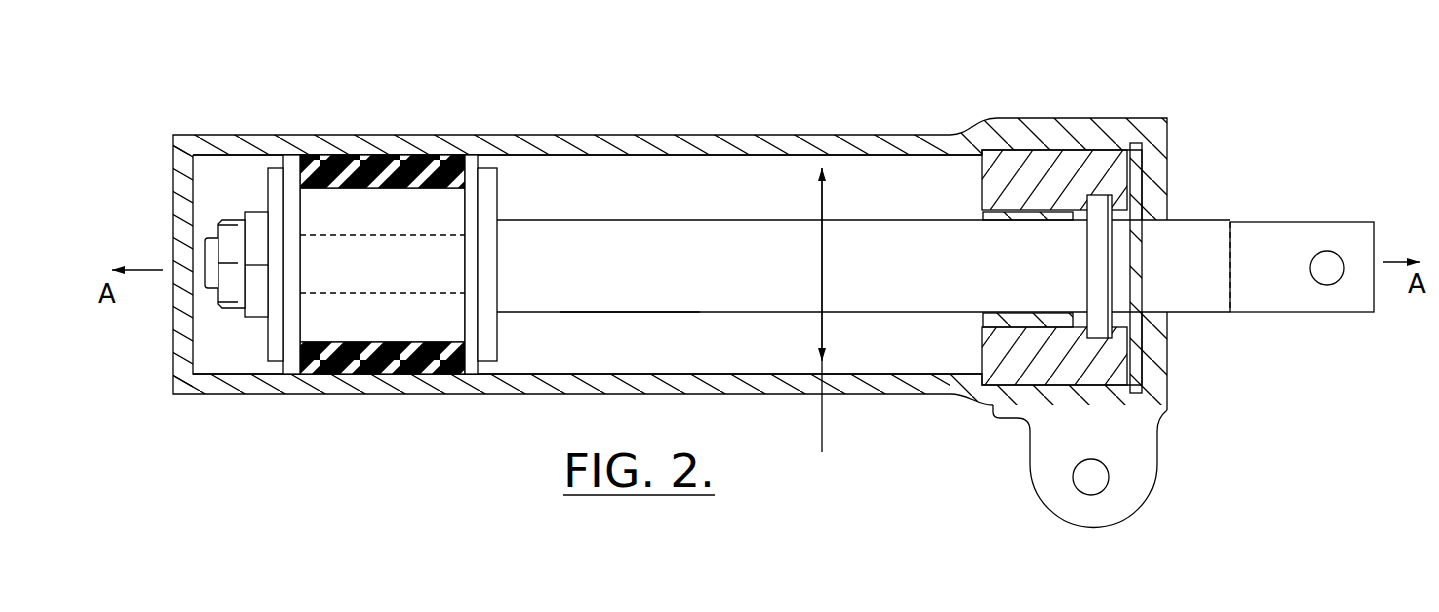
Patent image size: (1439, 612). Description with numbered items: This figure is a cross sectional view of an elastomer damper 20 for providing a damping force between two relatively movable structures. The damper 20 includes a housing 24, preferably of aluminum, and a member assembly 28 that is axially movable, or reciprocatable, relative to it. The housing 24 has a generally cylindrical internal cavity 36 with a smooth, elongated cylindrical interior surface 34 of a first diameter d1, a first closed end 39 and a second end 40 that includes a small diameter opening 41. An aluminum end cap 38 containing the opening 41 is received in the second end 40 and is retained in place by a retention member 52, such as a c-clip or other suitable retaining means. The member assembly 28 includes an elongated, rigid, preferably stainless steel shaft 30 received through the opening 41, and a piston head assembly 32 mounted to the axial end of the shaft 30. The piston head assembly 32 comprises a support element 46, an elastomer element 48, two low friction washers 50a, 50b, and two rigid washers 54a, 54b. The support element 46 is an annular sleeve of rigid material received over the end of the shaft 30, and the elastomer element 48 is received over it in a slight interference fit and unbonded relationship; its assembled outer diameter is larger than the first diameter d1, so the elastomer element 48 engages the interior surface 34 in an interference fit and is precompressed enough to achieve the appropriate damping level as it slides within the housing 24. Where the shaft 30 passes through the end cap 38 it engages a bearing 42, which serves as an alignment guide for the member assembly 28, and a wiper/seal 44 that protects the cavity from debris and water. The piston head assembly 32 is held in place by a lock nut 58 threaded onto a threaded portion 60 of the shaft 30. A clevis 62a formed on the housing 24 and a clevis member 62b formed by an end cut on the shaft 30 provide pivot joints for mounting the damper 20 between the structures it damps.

The elastomer damper 20 is at (828, 106).
The housing 24 is at (503, 131).
The member assembly 28 is at (594, 320).
The shaft 30 is at (761, 281).
The piston head assembly 32 is at (363, 387).
The cylindrical interior surface 34 is at (631, 157).
The internal cavity 36 is at (550, 357).
The end cap 38 is at (1075, 168).
The first closed end 39 is at (169, 126).
The second end 40 is at (1173, 104).
The opening 41 is at (970, 327).
The bearing 42 is at (1020, 212).
The wiper/seal 44 is at (1100, 210).
The support element 46 is at (297, 345).
The elastomer element 48 is at (428, 362).
The low friction washer 50a is at (471, 162).
The low friction washer 50b is at (293, 163).
The retention member 52 is at (1140, 357).
The rigid washer 54a is at (488, 193).
The rigid washer 54b is at (292, 363).
The lock nut 58 is at (233, 283).
The threaded portion 60 is at (213, 243).
The clevis 62a is at (1081, 505).
The clevis member 62b is at (1334, 324).
The first diameter d1 is at (846, 314).